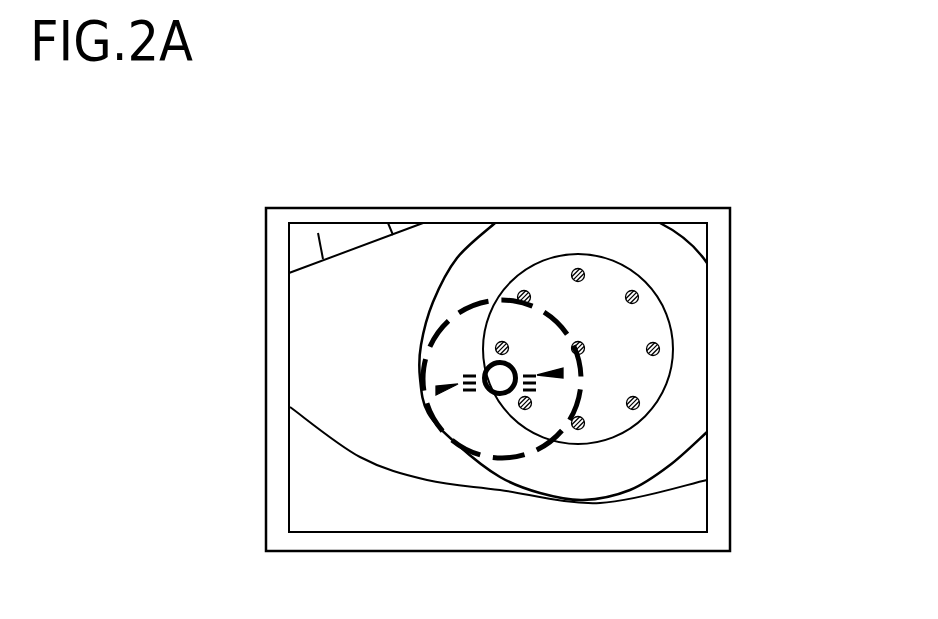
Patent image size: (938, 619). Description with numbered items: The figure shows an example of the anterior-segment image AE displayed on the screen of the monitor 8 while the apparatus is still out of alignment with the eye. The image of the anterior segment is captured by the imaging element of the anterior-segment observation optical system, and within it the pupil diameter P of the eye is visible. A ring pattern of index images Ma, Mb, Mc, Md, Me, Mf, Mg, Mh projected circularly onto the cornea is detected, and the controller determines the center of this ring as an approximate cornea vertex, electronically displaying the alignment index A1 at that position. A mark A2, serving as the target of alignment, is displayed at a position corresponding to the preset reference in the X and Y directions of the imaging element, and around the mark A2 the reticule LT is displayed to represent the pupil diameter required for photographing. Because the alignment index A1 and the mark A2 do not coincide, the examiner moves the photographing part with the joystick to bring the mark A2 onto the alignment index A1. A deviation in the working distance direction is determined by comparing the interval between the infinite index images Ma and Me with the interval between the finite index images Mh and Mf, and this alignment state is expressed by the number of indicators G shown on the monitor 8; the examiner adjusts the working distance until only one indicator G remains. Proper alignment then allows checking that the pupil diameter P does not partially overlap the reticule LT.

The monitor 8 is at (355, 207).
The anterior-segment image AE is at (382, 432).
The pupil diameter P is at (638, 293).
The reticule LT is at (442, 435).
The mark A2 is at (483, 400).
The alignment index A1 is at (585, 345).
The indicators G is at (440, 388).
The index image Ma is at (661, 349).
The index image Mb is at (634, 291).
The index image Mc is at (578, 268).
The index image Md is at (522, 290).
The index image Me is at (499, 342).
The index image Mf is at (521, 410).
The index image Mg is at (577, 430).
The index image Mh is at (636, 410).